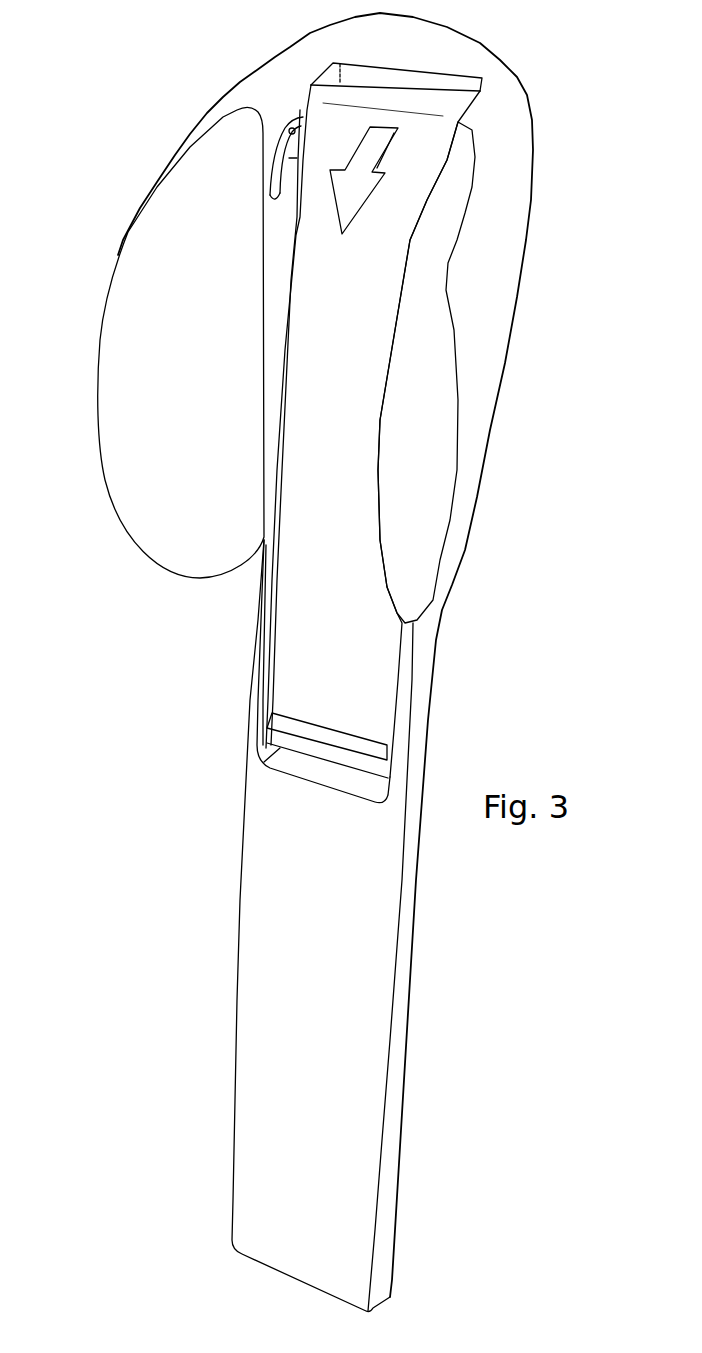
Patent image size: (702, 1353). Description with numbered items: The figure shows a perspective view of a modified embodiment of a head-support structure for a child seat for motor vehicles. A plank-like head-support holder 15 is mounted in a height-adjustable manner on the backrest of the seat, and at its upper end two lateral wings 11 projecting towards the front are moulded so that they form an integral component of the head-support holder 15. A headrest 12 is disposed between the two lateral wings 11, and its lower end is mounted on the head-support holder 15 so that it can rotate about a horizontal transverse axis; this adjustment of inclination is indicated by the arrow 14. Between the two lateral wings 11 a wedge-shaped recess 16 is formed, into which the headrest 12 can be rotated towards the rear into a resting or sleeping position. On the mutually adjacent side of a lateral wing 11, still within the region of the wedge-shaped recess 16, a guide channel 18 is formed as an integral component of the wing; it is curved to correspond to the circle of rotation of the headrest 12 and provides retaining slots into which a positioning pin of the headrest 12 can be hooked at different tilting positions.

The lateral wing 11 is at (113, 341).
The headrest 12 is at (303, 415).
The arrow 14 is at (373, 145).
The head-support holder 15 is at (252, 960).
The wedge-shaped recess 16 is at (298, 218).
The guide channel 18 is at (283, 132).